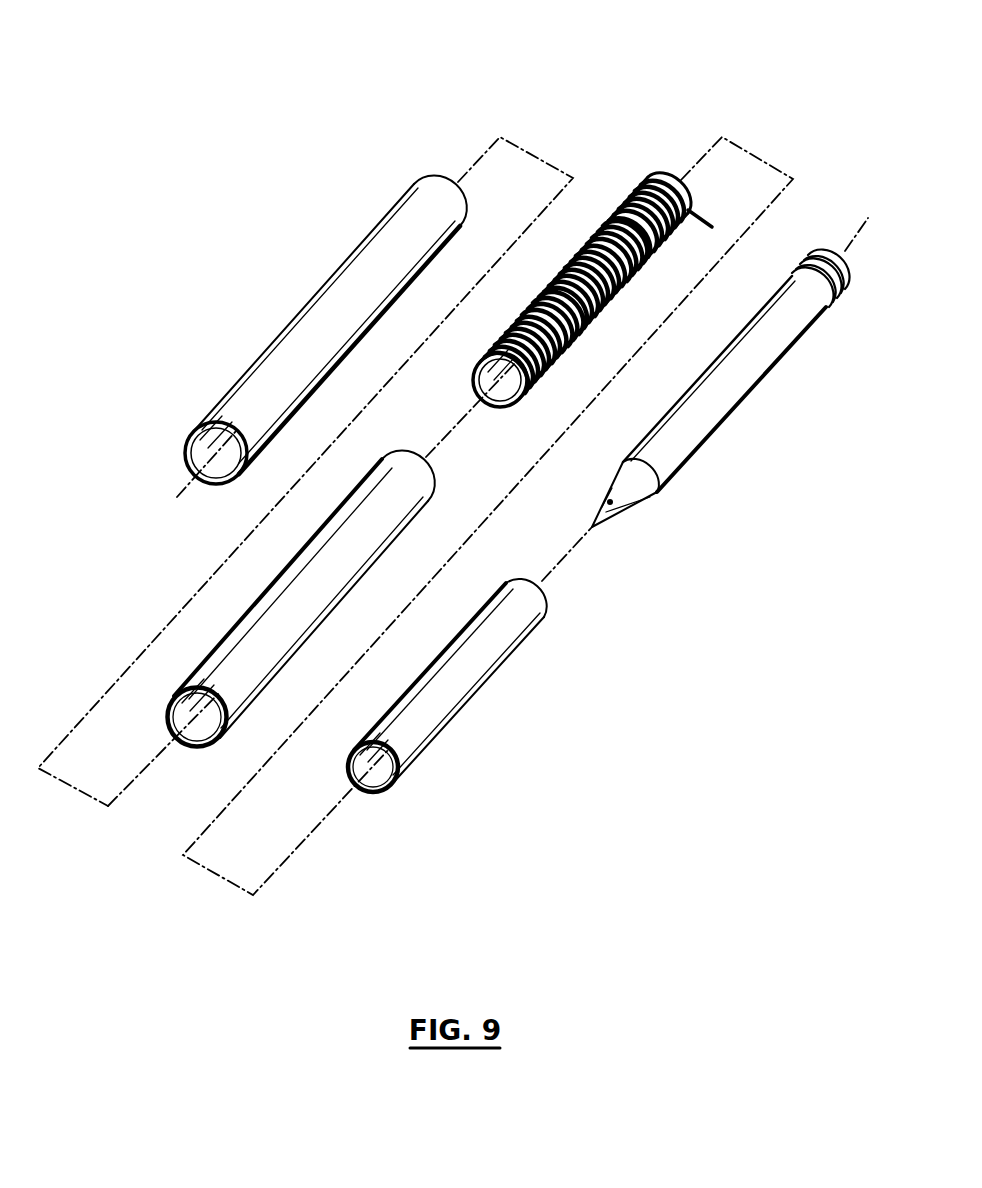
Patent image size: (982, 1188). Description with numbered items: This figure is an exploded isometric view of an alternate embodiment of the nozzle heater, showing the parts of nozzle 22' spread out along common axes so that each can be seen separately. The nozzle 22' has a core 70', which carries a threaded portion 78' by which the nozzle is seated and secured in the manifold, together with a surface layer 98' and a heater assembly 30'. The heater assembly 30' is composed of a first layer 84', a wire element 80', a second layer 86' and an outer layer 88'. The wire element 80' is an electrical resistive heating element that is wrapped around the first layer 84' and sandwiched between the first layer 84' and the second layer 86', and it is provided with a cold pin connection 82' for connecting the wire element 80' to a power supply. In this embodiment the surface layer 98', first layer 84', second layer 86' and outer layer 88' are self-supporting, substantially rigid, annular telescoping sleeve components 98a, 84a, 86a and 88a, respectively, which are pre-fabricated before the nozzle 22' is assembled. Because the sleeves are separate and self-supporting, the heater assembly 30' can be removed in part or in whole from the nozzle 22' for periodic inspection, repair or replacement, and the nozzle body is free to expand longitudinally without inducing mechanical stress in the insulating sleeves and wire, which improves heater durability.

The heater assembly 30' is at (305, 406).
The nozzle 22' is at (488, 516).
The core 70' is at (726, 401).
The threaded portion 78' is at (853, 292).
The wire element 80' is at (584, 246).
The cold pin connection 82' is at (777, 204).
The first layer 84' is at (596, 237).
The sleeve component 84a is at (502, 405).
The second layer 86' is at (276, 670).
The sleeve component 86a is at (435, 491).
The outer layer 88' is at (330, 324).
The sleeve component 88a is at (217, 404).
The surface layer 98' is at (451, 681).
The sleeve component 98a is at (425, 748).